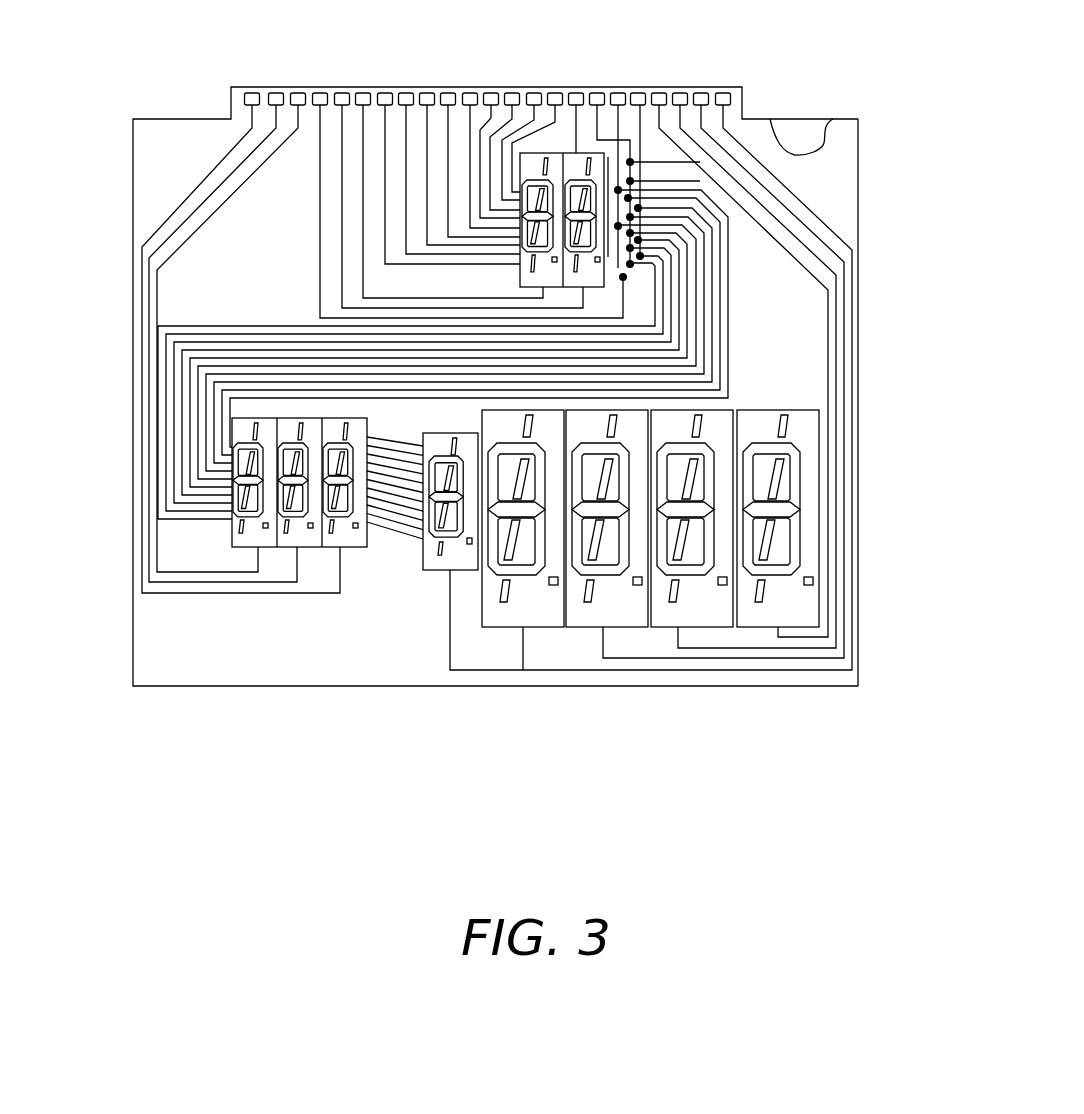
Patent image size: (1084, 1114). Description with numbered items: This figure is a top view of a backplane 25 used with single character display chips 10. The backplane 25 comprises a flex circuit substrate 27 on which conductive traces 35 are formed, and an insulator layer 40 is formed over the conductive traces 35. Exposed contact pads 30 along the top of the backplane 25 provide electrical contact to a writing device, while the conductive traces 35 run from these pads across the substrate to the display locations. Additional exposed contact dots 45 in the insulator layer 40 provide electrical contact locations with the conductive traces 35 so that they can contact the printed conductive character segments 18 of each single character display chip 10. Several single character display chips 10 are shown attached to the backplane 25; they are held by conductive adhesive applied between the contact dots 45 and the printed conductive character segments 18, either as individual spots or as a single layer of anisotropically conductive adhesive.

The single character display chip 10 is at (713, 518).
The printed conductive character segments 18 is at (792, 545).
The backplane 25 is at (132, 196).
The flex circuit substrate 27 is at (804, 132).
The exposed contact pads 30 is at (321, 92).
The conductive traces 35 is at (834, 226).
The insulator layer 40 is at (843, 160).
The exposed contact dots 45 is at (650, 252).